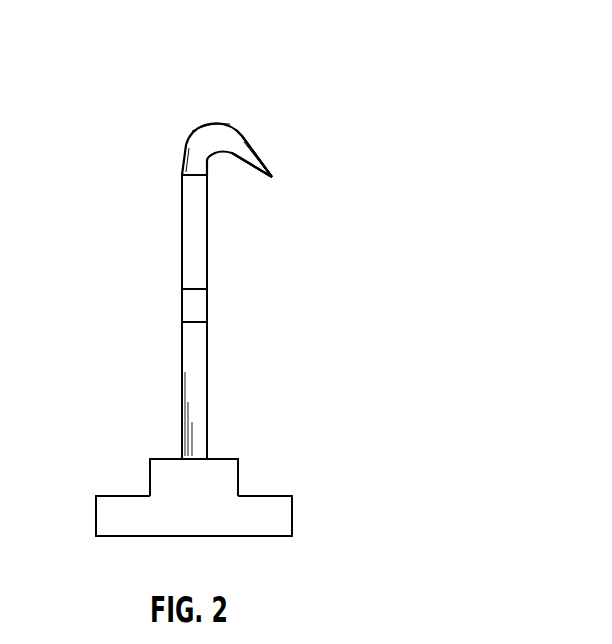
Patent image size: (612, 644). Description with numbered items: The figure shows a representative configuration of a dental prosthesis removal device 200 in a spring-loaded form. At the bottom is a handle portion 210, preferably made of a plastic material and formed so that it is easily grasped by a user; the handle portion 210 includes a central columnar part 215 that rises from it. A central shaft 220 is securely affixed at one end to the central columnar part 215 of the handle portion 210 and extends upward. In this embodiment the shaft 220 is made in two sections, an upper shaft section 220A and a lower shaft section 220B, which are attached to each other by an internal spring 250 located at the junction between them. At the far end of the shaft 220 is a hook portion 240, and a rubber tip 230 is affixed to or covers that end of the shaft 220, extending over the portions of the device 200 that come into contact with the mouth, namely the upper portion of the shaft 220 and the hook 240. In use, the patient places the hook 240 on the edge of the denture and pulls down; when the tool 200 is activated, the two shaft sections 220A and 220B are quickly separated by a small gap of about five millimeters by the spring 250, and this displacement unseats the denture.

The dental prosthesis removal device 200 is at (358, 65).
The handle portion 210 is at (265, 496).
The central columnar part 215 is at (150, 478).
The central shaft 220 is at (228, 213).
The first shaft section 220A is at (182, 228).
The second shaft section 220B is at (182, 386).
The rubber tip 230 is at (188, 145).
The hook portion 240 is at (264, 146).
The internal spring 250 is at (208, 305).